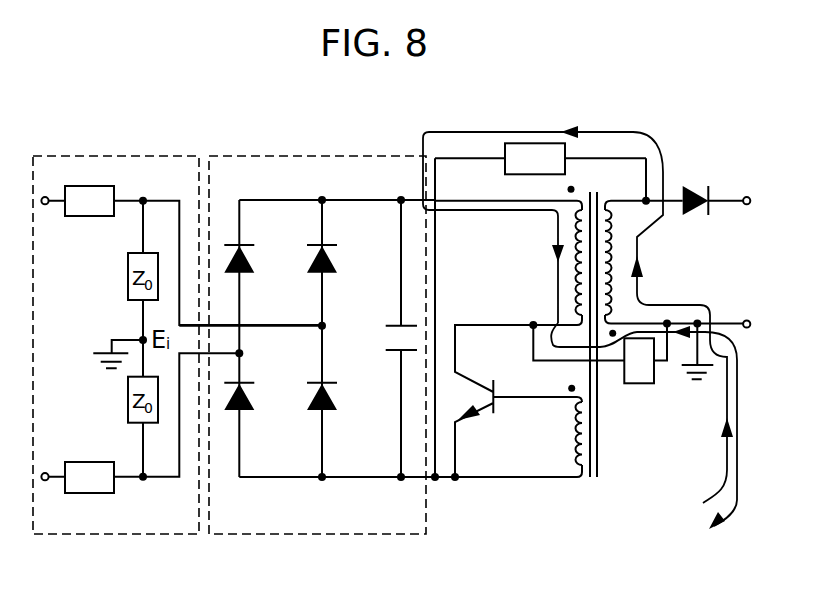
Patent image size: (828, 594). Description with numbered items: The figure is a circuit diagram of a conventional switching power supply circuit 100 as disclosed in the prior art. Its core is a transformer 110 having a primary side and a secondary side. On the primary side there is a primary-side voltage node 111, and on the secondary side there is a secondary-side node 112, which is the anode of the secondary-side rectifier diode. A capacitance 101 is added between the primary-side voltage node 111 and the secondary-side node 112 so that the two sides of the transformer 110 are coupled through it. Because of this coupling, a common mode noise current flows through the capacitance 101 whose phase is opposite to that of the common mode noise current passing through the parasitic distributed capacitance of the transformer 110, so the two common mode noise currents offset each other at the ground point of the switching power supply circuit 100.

The switching power supply circuit 100 is at (696, 118).
The capacitance 101 is at (537, 142).
The transformer 110 is at (594, 185).
The primary-side voltage node 111 is at (436, 480).
The secondary-side node 112 is at (645, 197).